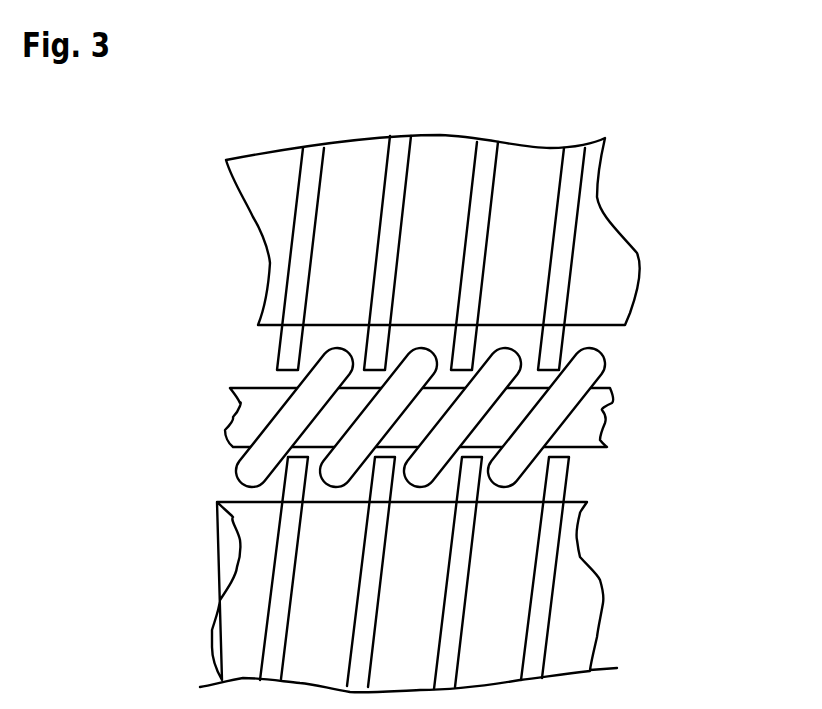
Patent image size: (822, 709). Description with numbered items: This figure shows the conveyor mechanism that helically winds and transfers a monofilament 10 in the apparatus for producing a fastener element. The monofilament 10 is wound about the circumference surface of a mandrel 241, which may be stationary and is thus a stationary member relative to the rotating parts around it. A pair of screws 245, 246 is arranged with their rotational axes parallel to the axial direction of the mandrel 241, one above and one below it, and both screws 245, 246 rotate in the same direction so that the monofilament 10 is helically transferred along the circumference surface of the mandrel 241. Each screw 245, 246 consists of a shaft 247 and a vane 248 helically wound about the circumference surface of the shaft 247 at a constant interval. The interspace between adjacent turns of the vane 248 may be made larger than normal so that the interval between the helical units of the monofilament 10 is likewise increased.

The monofilament 10 is at (247, 467).
The mandrel 241 is at (590, 423).
The screw 245 is at (460, 252).
The screw 246 is at (230, 623).
The shaft 247 is at (615, 318).
The vane 248 is at (560, 253).